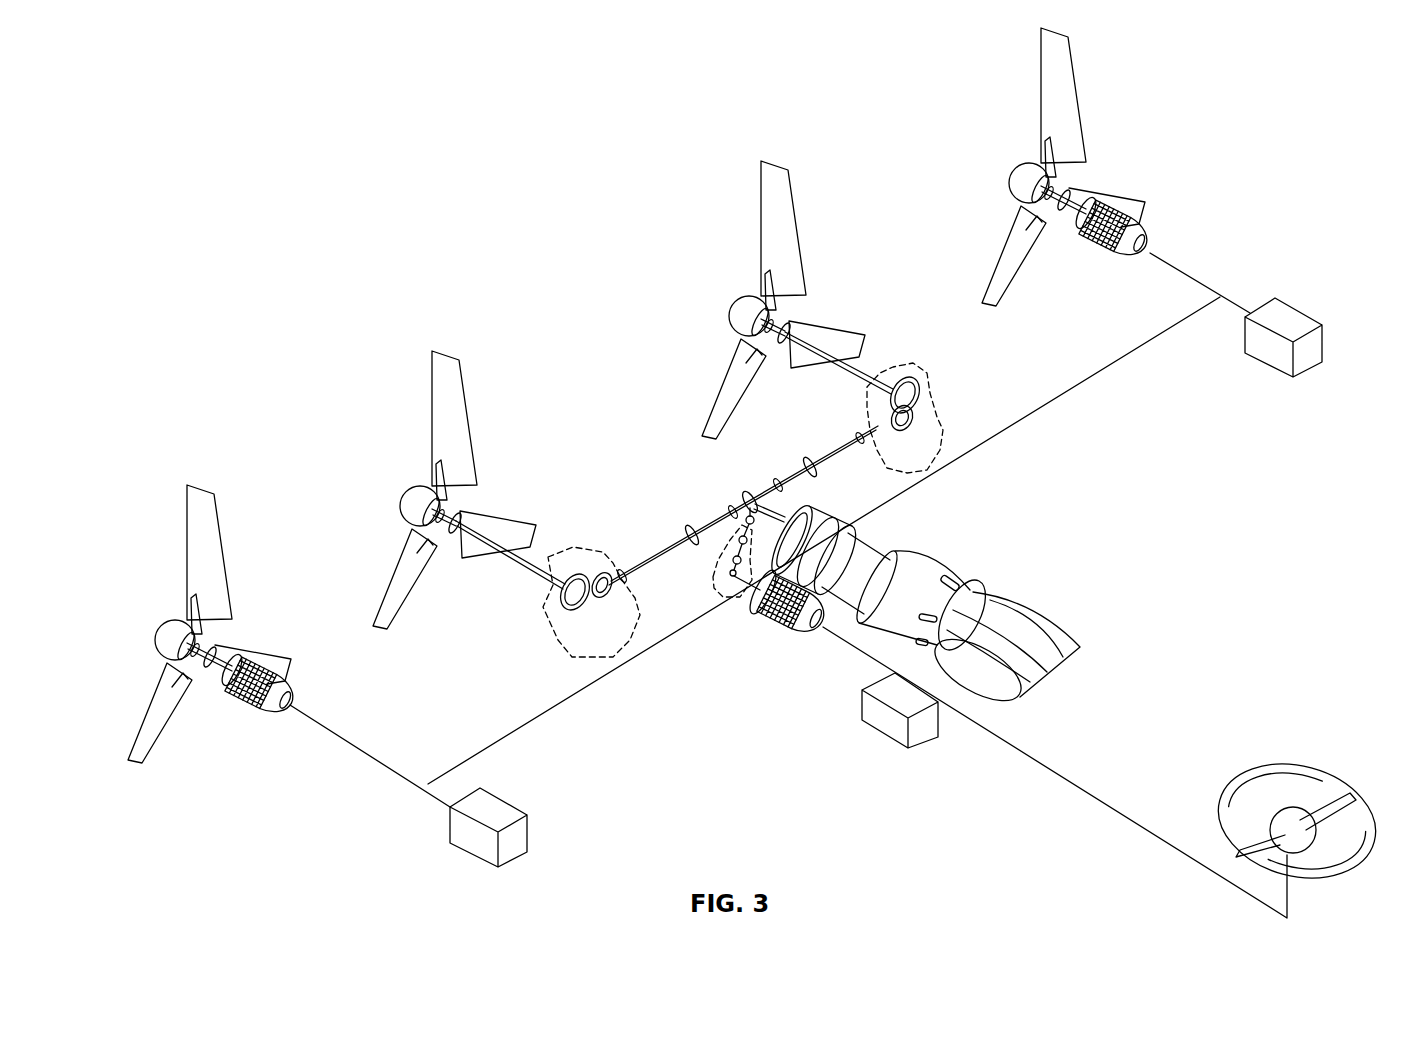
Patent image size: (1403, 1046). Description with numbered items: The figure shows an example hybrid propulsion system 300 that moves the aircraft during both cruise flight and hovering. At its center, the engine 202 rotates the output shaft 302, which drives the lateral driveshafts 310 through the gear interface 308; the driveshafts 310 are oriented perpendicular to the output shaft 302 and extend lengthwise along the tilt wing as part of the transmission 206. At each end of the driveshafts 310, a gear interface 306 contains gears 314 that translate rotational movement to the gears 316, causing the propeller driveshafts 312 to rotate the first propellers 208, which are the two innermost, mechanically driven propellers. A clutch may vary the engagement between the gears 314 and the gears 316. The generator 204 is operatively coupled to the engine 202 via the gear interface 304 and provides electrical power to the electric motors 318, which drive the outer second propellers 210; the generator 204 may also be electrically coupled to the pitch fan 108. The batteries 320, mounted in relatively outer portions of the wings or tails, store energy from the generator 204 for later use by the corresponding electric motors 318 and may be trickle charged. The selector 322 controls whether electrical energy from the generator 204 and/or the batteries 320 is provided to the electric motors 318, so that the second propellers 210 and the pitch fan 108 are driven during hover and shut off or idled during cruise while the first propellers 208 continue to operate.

The hybrid propulsion system 300 is at (290, 100).
The second propellers 210 is at (322, 505).
The first propellers 208 is at (565, 372).
The transmission 206 is at (657, 440).
The electric motors 318 is at (240, 695).
The batteries 320 is at (472, 845).
The selector 322 is at (885, 718).
The driveshafts 310 is at (657, 547).
The gear interface 308 is at (762, 487).
The gear interface 306 is at (645, 640).
The gears 314 is at (600, 587).
The propeller driveshafts 312 is at (557, 573).
The gears 316 is at (562, 597).
The gear interface 304 is at (715, 598).
The generator 204 is at (768, 612).
The output shaft 302 is at (777, 503).
The engine 202 is at (1023, 647).
The pitch fan 108 is at (1287, 765).